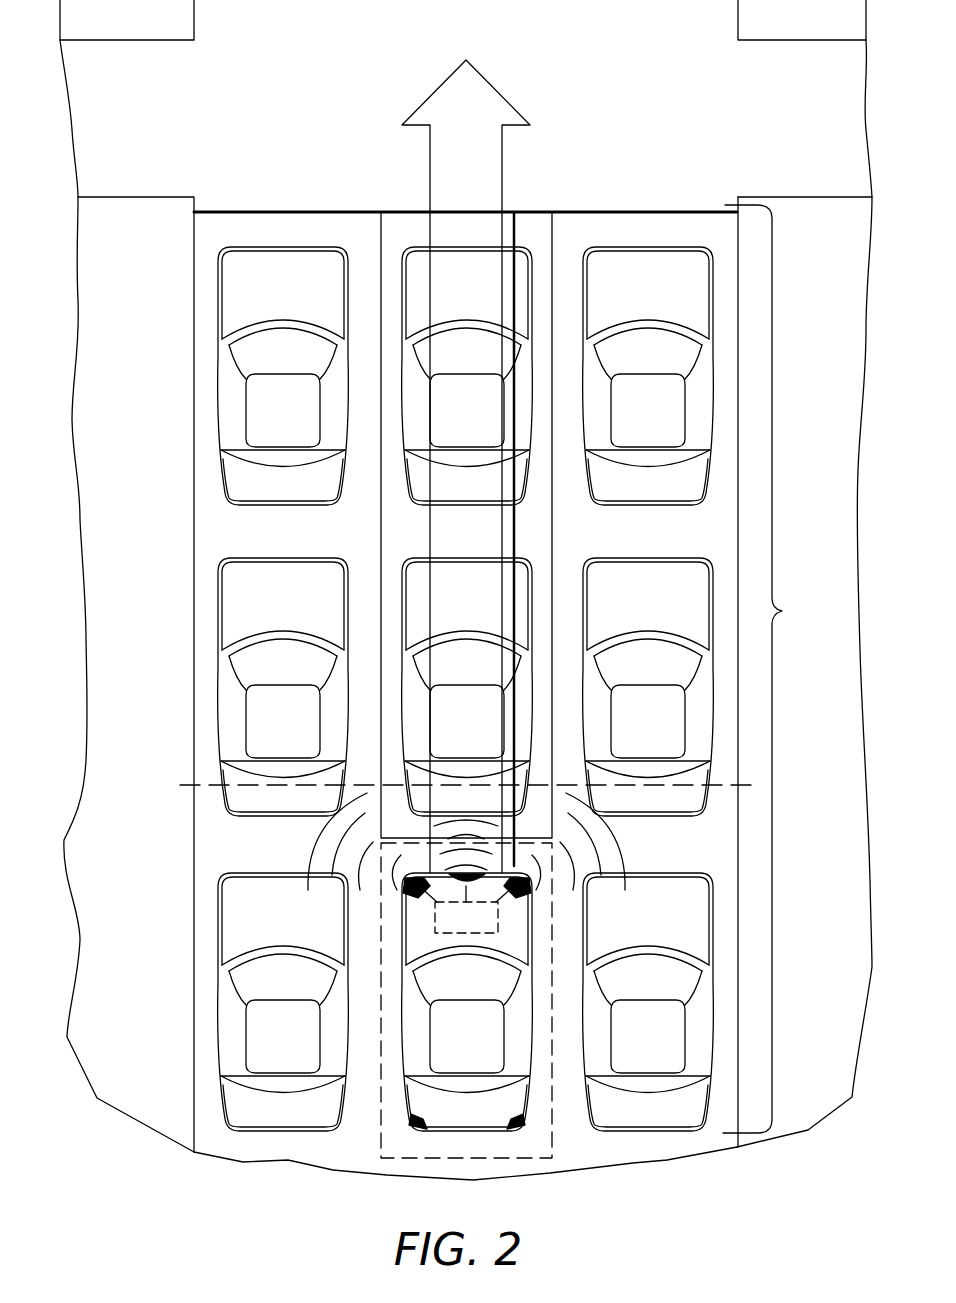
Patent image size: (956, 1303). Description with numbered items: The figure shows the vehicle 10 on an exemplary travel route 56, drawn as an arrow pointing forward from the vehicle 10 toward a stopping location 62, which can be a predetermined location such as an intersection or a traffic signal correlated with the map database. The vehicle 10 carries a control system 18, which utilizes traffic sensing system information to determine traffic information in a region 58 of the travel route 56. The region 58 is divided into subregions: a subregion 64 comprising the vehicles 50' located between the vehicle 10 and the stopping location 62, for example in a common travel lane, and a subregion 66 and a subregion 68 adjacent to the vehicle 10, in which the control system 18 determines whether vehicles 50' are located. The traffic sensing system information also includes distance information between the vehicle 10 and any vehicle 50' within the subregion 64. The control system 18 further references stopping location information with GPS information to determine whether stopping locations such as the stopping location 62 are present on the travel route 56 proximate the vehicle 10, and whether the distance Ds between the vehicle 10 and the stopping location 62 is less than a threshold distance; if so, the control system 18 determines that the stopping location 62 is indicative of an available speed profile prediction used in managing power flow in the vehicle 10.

The vehicle 10 is at (481, 1056).
The control system 18 is at (466, 863).
The vehicles 50' is at (466, 689).
The travel route 56 is at (486, 101).
The region 58 is at (783, 611).
The stopping location 62 is at (640, 208).
The subregion 64 is at (384, 206).
The subregion 66 is at (227, 858).
The subregion 68 is at (697, 858).
The distance Ds is at (516, 545).